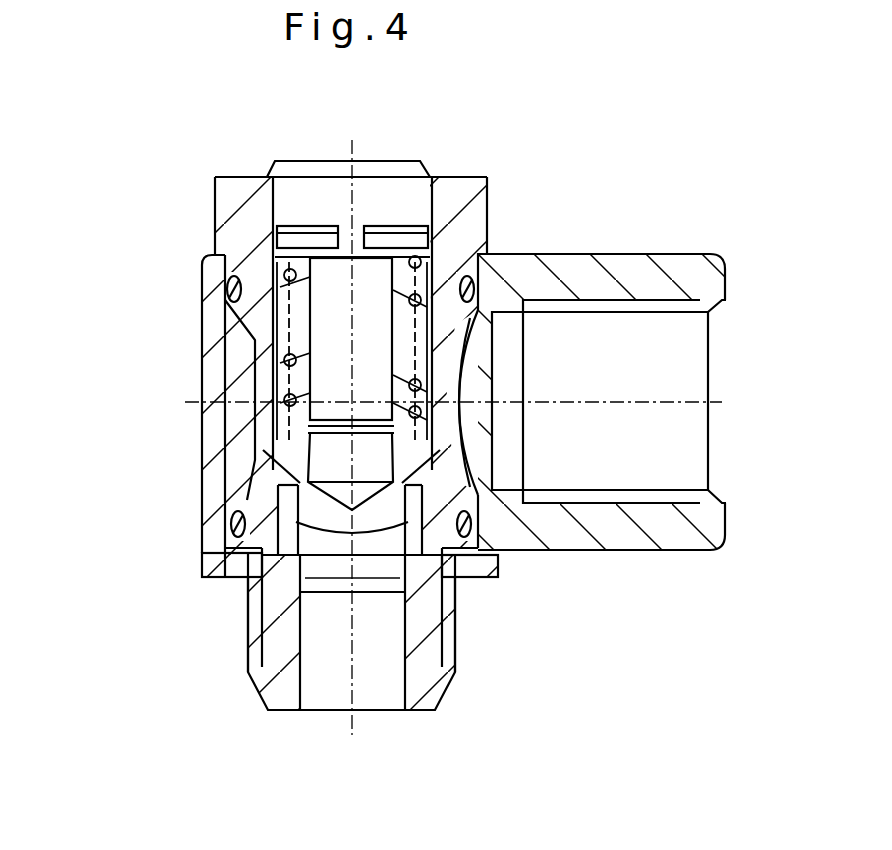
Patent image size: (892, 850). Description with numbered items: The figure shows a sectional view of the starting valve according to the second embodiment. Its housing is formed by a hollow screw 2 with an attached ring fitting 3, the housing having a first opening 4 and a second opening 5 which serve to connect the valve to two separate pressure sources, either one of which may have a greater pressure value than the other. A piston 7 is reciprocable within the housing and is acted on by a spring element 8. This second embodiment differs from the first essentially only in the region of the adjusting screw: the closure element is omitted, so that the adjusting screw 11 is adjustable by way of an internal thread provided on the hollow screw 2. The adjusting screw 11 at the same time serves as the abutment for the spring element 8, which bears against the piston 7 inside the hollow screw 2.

The hollow screw 2 is at (278, 610).
The ring fitting 3 is at (620, 275).
The first opening 4 is at (348, 705).
The second opening 5 is at (728, 402).
The piston 7 is at (333, 313).
The spring element 8 is at (273, 363).
The adjusting screw 11 is at (320, 240).